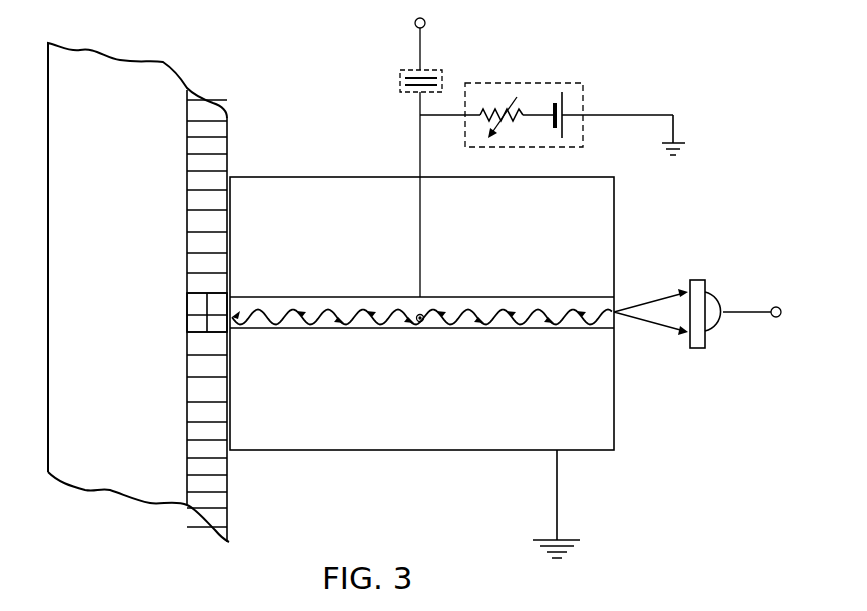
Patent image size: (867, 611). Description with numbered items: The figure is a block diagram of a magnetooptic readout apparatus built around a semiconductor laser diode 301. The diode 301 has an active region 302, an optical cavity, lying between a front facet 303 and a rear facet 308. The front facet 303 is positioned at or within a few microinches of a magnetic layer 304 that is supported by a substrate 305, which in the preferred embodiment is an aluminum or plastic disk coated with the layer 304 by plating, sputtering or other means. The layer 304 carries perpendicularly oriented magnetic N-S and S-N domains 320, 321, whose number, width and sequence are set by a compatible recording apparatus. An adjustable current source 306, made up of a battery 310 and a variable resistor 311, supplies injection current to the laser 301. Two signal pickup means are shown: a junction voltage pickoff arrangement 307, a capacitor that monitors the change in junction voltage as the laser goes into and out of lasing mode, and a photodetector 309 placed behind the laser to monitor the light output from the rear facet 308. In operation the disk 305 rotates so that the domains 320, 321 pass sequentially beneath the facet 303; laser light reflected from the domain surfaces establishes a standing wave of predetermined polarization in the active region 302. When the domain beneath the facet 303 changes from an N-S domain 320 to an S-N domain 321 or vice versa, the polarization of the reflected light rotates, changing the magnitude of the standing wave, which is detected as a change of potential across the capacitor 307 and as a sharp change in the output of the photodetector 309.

The semiconductor laser diode 301 is at (614, 420).
The active region 302 is at (578, 326).
The front facet 303 is at (232, 300).
The magnetic layer 304 is at (212, 110).
The substrate 305 is at (107, 73).
The adjustable current source 306 is at (543, 83).
The junction voltage pickoff arrangement 307 is at (430, 70).
The rear facet 308 is at (614, 312).
The photodetector 309 is at (710, 302).
The battery 310 is at (565, 125).
The variable resistor 311 is at (485, 110).
The N-S magnetic domain 320 is at (187, 300).
The S-N magnetic domain 321 is at (187, 325).